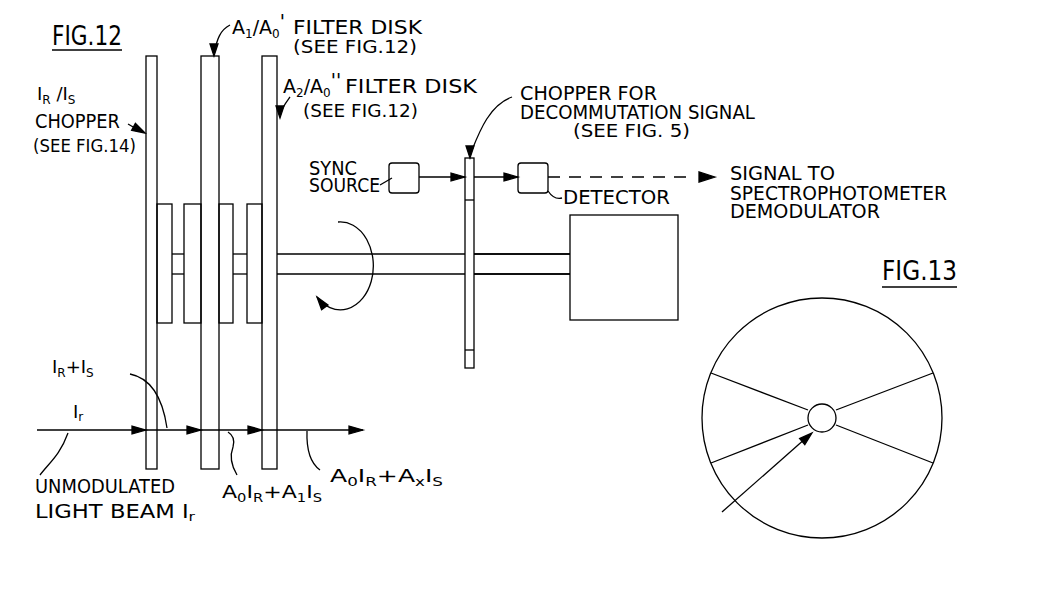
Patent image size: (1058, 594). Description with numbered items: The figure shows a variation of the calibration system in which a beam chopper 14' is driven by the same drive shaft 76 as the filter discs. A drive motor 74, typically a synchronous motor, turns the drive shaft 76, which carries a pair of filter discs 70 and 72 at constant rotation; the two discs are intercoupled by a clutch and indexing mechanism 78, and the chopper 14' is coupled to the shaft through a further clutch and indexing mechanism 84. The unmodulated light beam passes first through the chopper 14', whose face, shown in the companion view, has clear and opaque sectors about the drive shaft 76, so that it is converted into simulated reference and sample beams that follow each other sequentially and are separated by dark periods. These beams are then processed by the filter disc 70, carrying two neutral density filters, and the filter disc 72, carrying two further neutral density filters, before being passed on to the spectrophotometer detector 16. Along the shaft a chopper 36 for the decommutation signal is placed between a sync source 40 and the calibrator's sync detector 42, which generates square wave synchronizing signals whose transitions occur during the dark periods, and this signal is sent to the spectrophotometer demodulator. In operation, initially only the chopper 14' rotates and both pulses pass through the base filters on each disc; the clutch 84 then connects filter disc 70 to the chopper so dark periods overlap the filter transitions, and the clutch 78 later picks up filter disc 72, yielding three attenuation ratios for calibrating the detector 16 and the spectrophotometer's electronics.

In FIG. 12, the beam chopper 14' is at (172, 245).
In FIG. 13, the beam chopper 14' is at (825, 419).
In FIG. 12, the filter disc 70 is at (210, 113).
In FIG. 12, the filter disc 72 is at (273, 152).
In FIG. 12, the clutch and indexing mechanism 84 is at (190, 198).
In FIG. 12, the clutch and indexing mechanism 78 is at (229, 331).
In FIG. 12, the sync source 40 is at (400, 168).
In FIG. 12, the chopper for decommutation signal 36 is at (467, 228).
In FIG. 12, the sync detector 42 is at (528, 188).
In FIG. 12, the drive motor 74 is at (670, 253).
In FIG. 12, the drive shaft 76 is at (502, 268).
In FIG. 13, the drive shaft 76 is at (817, 410).
In FIG. 12, the detector 16 is at (495, 437).